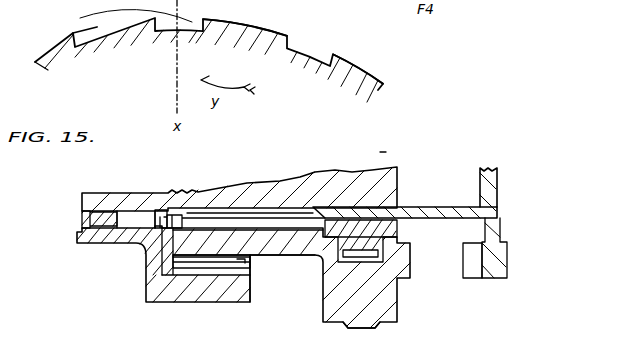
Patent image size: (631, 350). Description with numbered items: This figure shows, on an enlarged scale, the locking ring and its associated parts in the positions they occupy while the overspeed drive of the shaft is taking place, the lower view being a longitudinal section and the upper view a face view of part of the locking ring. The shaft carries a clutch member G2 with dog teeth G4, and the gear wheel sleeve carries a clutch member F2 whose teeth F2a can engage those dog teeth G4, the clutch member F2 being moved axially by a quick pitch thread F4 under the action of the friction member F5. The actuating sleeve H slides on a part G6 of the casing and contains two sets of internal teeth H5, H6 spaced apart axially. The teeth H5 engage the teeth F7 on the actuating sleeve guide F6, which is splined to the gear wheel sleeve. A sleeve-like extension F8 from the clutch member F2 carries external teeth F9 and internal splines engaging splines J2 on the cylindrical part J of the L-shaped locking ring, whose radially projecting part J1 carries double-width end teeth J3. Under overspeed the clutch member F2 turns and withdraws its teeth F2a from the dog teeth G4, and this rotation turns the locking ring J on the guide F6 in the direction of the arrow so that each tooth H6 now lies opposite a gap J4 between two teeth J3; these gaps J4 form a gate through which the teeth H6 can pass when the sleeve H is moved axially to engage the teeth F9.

The locking ring J is at (208, 276).
The radially projecting part of locking ring J1 is at (277, 60).
The splines on locking ring J2 is at (250, 271).
The locking ring teeth J3 is at (260, 30).
The gaps between locking ring teeth J4 is at (73, 42).
The actuating sleeve H is at (318, 183).
The first set of teeth in actuating sleeve H5 is at (85, 218).
The second set of teeth in actuating sleeve H6 is at (135, 215).
The clutch member F2 is at (400, 299).
The clutch teeth F2a is at (405, 260).
The quick pitch thread F4 is at (376, 328).
The friction member F5 is at (353, 207).
The actuating sleeve guide F6 is at (160, 288).
The teeth on actuating sleeve guide F7 is at (82, 239).
The clutch member extension F8 is at (270, 250).
The teeth on clutch member extension F9 is at (183, 222).
The shaft clutch member G2 is at (500, 248).
The dog teeth G4 is at (470, 265).
The part of casing G6 is at (428, 218).